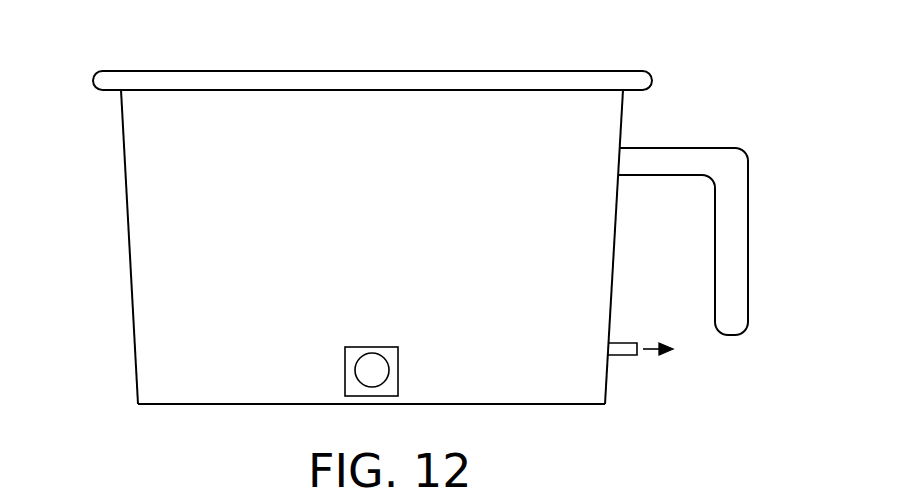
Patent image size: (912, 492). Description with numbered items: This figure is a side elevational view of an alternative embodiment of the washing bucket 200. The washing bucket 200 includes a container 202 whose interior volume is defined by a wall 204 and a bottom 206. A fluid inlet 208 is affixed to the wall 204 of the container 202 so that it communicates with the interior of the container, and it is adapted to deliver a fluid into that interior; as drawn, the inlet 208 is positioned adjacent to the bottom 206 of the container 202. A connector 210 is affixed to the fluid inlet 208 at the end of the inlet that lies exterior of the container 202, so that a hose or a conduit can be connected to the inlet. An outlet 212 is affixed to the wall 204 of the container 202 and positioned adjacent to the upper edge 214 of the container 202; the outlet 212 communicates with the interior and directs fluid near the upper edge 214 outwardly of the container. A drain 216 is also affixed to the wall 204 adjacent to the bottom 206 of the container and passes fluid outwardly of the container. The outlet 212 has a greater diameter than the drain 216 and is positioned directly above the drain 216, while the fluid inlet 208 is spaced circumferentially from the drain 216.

The washing bucket 200 is at (692, 86).
The container 202 is at (128, 246).
The wall 204 is at (155, 351).
The bottom 206 is at (228, 407).
The fluid inlet 208 is at (384, 368).
The connector 210 is at (362, 345).
The outlet 212 is at (717, 155).
The upper edge 214 is at (573, 70).
The drain 216 is at (620, 357).